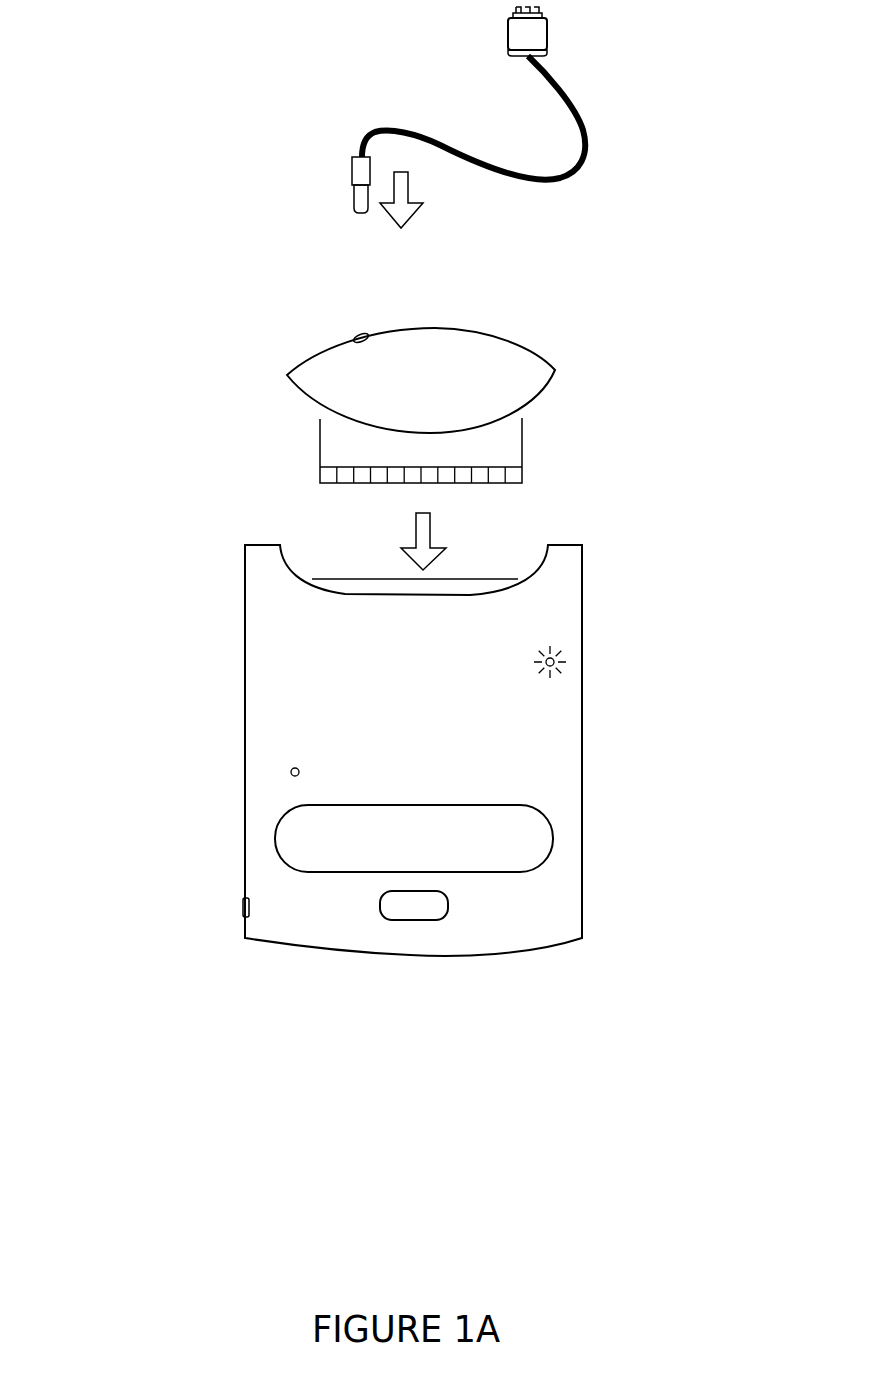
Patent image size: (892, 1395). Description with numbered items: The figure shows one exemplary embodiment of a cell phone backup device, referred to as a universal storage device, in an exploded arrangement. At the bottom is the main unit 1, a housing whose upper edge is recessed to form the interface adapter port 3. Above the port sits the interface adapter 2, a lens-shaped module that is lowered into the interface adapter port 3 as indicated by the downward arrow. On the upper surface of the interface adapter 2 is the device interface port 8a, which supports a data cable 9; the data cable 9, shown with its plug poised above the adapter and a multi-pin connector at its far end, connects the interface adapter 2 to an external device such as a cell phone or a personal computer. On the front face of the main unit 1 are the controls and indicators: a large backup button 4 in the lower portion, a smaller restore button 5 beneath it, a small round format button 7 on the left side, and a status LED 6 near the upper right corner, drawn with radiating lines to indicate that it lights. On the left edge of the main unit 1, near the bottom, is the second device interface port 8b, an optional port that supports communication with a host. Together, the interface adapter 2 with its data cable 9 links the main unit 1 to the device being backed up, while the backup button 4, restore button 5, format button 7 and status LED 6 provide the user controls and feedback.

The main unit 1 is at (243, 578).
The interface adapter 2 is at (287, 378).
The interface adapter port 3 is at (500, 580).
The backup button 4 is at (548, 822).
The restore button 5 is at (448, 903).
The status LED 6 is at (548, 643).
The format button 7 is at (290, 772).
The device interface port 8a is at (366, 334).
The device interface port 8b is at (240, 906).
The data cable 9 is at (352, 167).